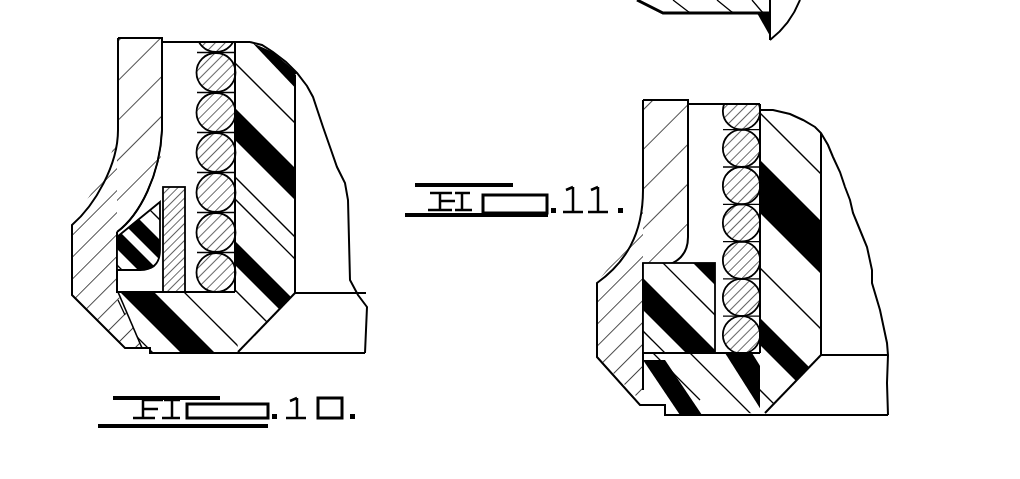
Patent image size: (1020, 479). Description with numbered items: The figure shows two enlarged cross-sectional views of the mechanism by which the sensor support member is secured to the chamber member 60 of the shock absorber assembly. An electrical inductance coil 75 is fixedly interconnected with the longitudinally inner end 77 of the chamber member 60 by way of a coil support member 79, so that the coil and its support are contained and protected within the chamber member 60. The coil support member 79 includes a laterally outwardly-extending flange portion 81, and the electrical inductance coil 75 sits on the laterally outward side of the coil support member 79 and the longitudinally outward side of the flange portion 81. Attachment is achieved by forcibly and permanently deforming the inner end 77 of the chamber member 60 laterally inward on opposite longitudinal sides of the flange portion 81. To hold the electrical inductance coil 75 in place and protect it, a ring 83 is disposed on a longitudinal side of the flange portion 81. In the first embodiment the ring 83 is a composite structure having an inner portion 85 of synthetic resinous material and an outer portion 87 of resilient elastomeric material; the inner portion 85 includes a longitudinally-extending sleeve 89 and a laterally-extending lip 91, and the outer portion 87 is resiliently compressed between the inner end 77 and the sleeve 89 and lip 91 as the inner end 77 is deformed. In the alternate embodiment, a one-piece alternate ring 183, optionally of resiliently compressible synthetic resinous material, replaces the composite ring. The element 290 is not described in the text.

In FIG. 10, the chamber member 60 is at (112, 67).
In FIG. 11, the chamber member 60 is at (636, 139).
In FIG. 10, the electrical inductance coil 75 is at (216, 54).
In FIG. 11, the electrical inductance coil 75 is at (742, 106).
In FIG. 10, the longitudinally inner end 77 is at (88, 302).
In FIG. 11, the longitudinally inner end 77 is at (612, 328).
In FIG. 10, the coil support member 79 is at (283, 116).
In FIG. 11, the coil support member 79 is at (810, 136).
In FIG. 10, the flange portion 81 is at (147, 343).
In FIG. 11, the flange portion 81 is at (690, 382).
In FIG. 10, the ring 83 is at (137, 210).
In FIG. 10, the inner portion 85 is at (188, 268).
In FIG. 10, the outer portion 87 is at (127, 230).
In FIG. 10, the sleeve 89 is at (174, 192).
In FIG. 10, the lip 91 is at (108, 330).
In FIG. 11, the alternate ring 183 is at (665, 282).
In FIG. 11, the housing 290 is at (640, 0).